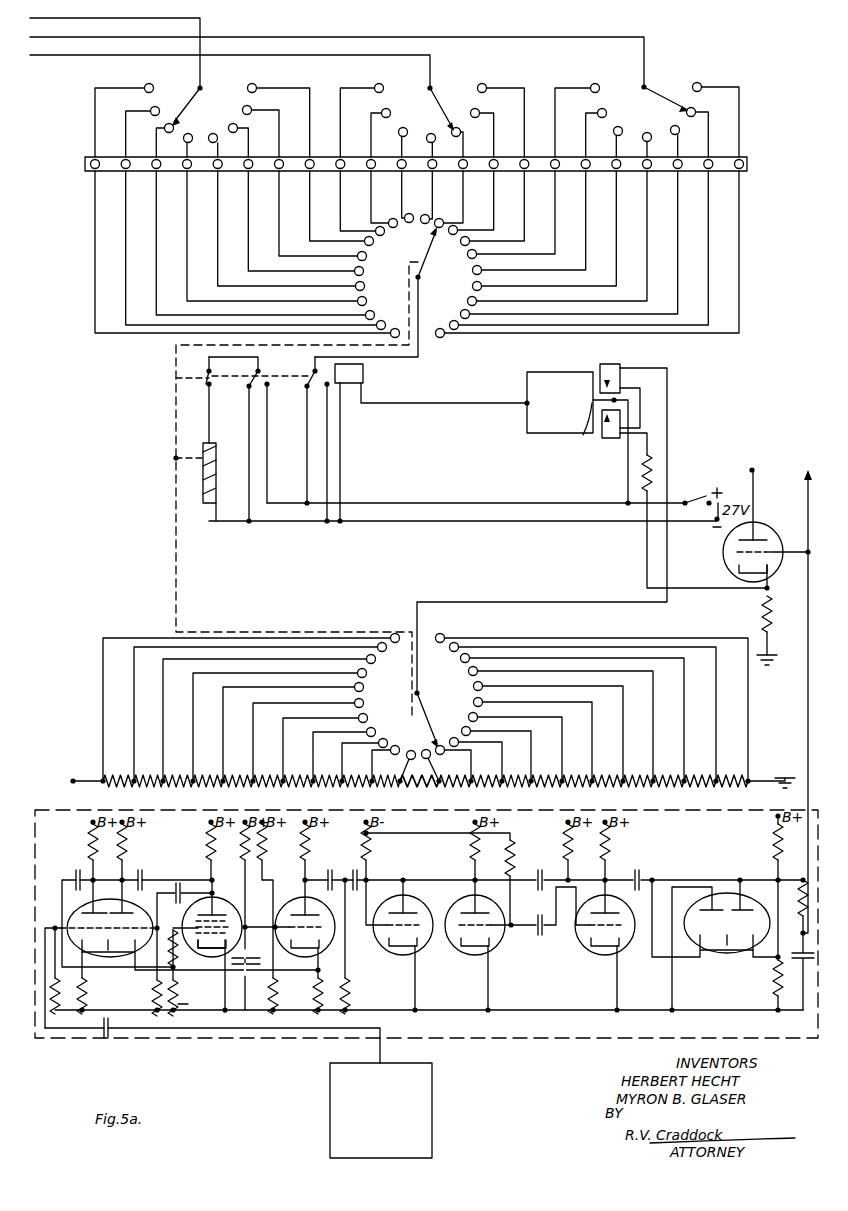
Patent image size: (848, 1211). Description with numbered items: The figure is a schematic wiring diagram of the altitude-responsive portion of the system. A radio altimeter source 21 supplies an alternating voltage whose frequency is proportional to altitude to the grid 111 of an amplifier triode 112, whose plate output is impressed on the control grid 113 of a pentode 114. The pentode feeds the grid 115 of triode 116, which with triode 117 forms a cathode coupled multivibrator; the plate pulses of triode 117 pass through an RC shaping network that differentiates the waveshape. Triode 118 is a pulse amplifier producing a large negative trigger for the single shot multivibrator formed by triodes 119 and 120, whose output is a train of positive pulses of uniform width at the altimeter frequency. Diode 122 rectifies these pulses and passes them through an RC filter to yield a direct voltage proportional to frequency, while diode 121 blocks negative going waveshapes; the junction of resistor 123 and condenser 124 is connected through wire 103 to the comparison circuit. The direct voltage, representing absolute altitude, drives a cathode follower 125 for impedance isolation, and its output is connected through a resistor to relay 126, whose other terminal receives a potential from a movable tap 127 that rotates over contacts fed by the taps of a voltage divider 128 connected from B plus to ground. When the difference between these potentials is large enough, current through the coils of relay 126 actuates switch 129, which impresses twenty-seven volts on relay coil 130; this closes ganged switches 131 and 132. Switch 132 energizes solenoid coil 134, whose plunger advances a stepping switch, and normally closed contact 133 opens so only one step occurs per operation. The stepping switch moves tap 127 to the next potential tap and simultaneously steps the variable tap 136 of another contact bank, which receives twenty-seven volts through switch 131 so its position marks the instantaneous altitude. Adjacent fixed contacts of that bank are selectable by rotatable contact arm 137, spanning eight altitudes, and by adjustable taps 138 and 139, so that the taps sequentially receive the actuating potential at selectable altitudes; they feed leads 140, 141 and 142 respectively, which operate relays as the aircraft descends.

The source 21 is at (432, 1078).
The wire 103 is at (805, 482).
The grid 111 is at (62, 920).
The amplifier triode 112 is at (70, 904).
The control grid 113 is at (185, 915).
The pentode 114 is at (204, 882).
The grid 115 is at (146, 878).
The triode 116 is at (136, 856).
The triode 117 is at (289, 892).
The pulse amplifier triode 118 is at (387, 893).
The triode 119 is at (459, 893).
The triode 120 is at (584, 942).
The diode 121 is at (706, 953).
The diode 122 is at (746, 953).
The resistor 123 is at (803, 870).
The condenser 124 is at (808, 962).
The cathode follower 125 is at (725, 554).
The relay 126 is at (622, 378).
The movable tap 127 is at (432, 700).
The voltage divider 128 is at (700, 778).
The switch 129 is at (585, 440).
The relay coil 130 is at (363, 372).
The switch 131 is at (303, 392).
The switch 132 is at (246, 392).
The normally closed contact 133 is at (200, 390).
The solenoid coil 134 is at (216, 466).
The variable tap 136 is at (426, 262).
The rotatable contact arm 137 is at (184, 105).
The adjustable tap 138 is at (441, 117).
The adjustable tap 139 is at (664, 110).
The lead 140 is at (203, 22).
The lead 141 is at (230, 56).
The lead 142 is at (403, 37).